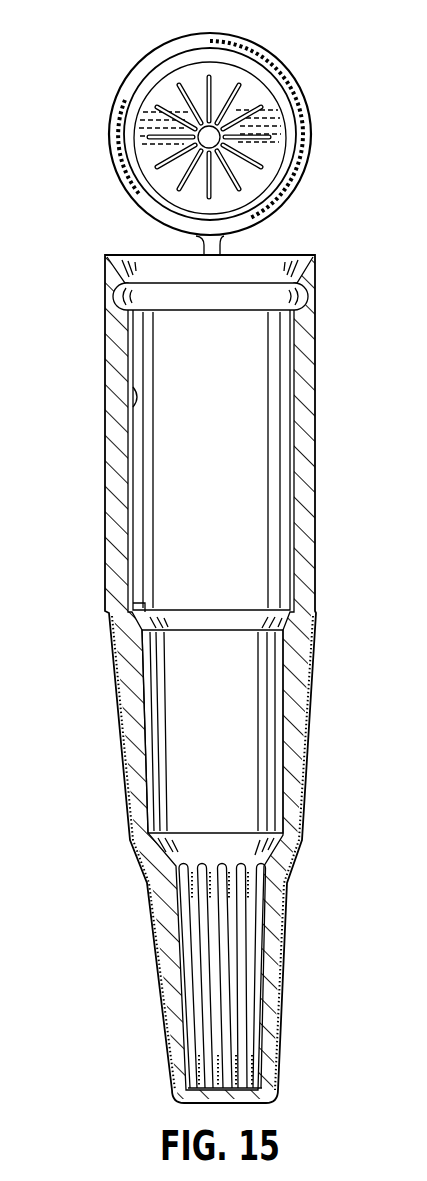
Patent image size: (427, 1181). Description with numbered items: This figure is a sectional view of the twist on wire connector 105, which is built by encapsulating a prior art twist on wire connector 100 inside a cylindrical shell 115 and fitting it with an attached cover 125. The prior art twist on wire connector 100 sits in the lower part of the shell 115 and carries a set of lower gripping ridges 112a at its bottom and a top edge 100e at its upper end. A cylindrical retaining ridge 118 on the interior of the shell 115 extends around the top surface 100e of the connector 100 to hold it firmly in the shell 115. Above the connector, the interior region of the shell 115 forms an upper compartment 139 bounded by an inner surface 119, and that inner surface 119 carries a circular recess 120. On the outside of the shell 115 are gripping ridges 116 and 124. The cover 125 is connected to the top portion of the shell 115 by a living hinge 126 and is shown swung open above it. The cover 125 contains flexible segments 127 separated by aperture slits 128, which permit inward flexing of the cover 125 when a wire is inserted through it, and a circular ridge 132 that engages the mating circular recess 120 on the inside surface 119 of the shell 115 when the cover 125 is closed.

The twist on wire connector 105 is at (322, 523).
The cylindrical shell 115 is at (112, 518).
The gripping ridge 124 is at (119, 716).
The circular recess 120 is at (112, 316).
The inner surface 119 is at (120, 410).
The upper compartment 139 is at (235, 442).
The cylindrical retaining ridge 118 is at (147, 595).
The top edge 100e is at (247, 627).
The prior art twist on wire connector 100 is at (242, 747).
The gripping ridge 116 is at (152, 942).
The lower gripping ridges 112a is at (230, 1012).
The living hinge 126 is at (227, 249).
The cover 125 is at (108, 95).
The circular ridge 132 is at (160, 196).
The flexible segments 127 is at (193, 190).
The aperture slits 128 is at (238, 182).